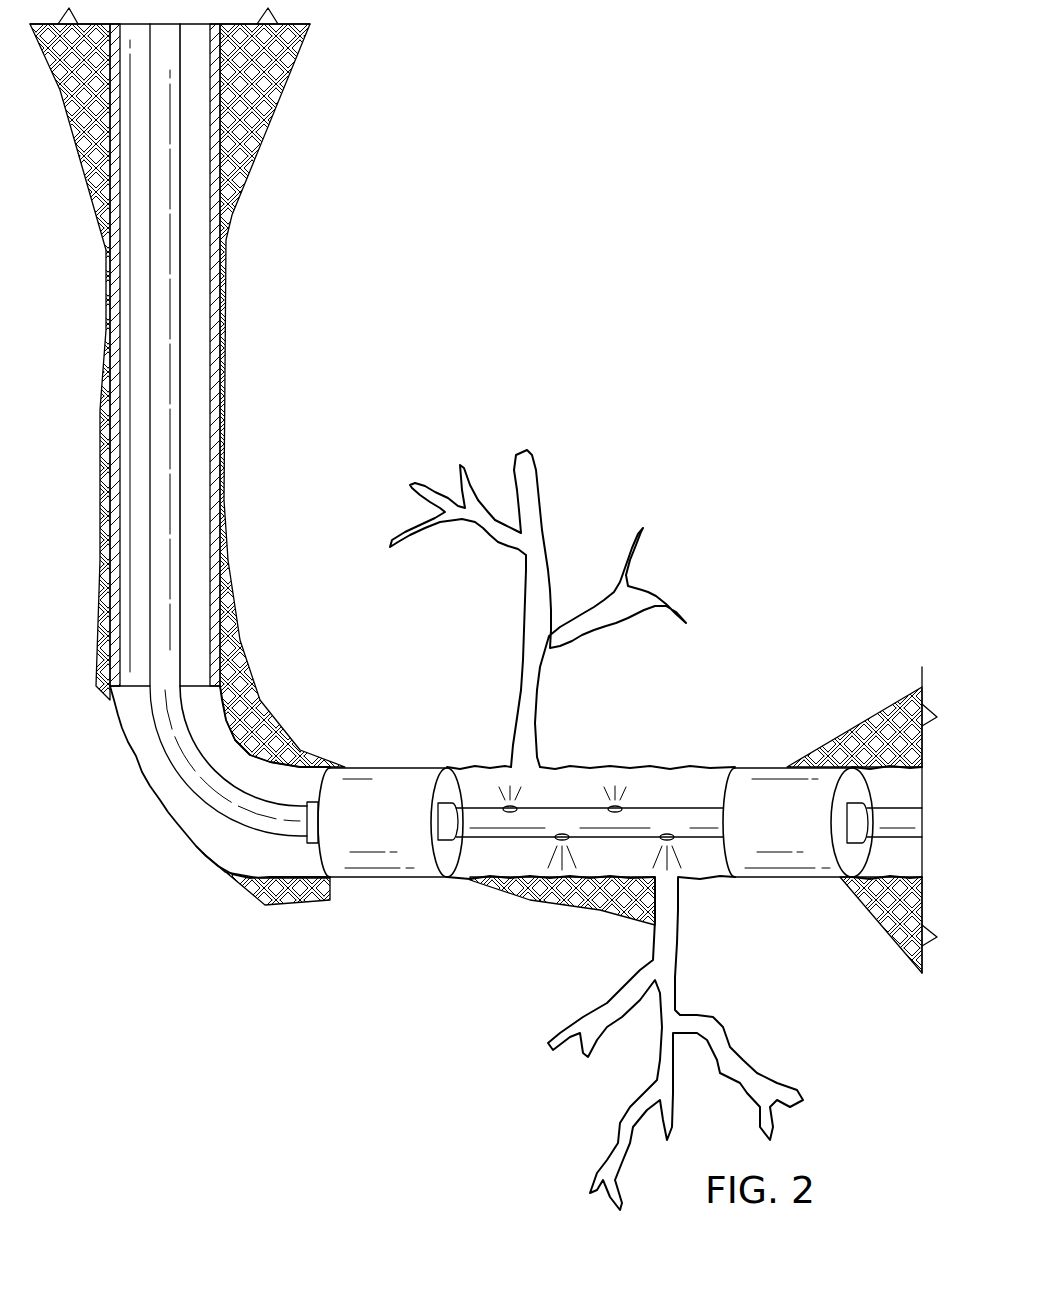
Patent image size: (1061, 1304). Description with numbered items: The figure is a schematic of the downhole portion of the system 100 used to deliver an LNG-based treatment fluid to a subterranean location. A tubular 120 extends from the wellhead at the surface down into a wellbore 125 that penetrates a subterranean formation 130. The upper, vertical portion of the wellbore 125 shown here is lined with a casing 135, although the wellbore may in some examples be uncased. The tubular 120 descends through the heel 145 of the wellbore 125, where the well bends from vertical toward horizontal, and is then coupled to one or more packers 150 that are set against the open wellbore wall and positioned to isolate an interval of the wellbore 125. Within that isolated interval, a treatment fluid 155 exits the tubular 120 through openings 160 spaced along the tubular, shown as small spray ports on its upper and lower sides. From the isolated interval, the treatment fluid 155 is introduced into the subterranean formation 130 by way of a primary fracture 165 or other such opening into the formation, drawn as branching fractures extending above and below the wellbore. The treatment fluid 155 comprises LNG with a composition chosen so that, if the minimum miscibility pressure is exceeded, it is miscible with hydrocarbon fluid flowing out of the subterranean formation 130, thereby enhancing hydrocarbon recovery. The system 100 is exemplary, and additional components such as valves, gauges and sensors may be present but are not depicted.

The system 100 is at (553, 292).
The tubular 120 is at (197, 335).
The wellbore 125 is at (220, 250).
The subterranean formation 130 is at (837, 597).
The casing 135 is at (208, 458).
The heel 145 is at (160, 808).
The packers 150 is at (407, 870).
The treatment fluid 155 is at (518, 800).
The openings 160 is at (667, 826).
The primary fracture 165 is at (516, 708).